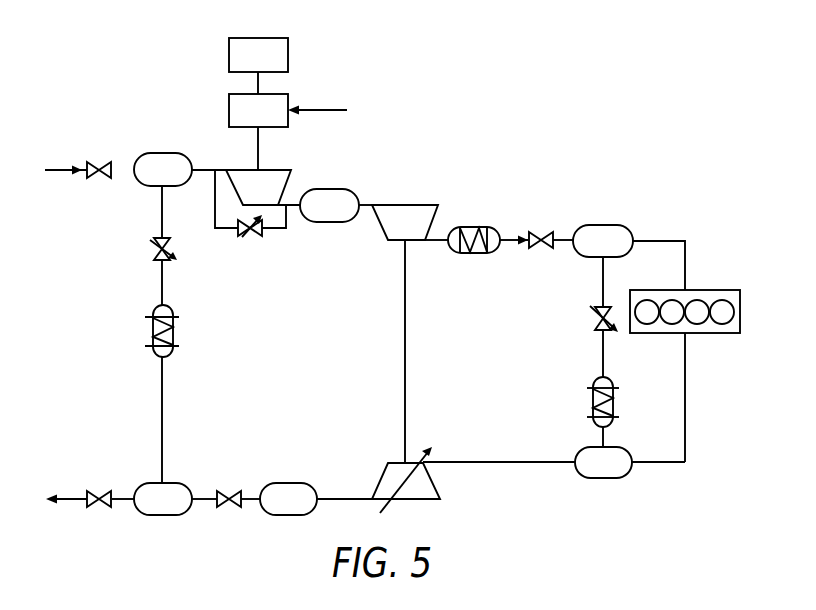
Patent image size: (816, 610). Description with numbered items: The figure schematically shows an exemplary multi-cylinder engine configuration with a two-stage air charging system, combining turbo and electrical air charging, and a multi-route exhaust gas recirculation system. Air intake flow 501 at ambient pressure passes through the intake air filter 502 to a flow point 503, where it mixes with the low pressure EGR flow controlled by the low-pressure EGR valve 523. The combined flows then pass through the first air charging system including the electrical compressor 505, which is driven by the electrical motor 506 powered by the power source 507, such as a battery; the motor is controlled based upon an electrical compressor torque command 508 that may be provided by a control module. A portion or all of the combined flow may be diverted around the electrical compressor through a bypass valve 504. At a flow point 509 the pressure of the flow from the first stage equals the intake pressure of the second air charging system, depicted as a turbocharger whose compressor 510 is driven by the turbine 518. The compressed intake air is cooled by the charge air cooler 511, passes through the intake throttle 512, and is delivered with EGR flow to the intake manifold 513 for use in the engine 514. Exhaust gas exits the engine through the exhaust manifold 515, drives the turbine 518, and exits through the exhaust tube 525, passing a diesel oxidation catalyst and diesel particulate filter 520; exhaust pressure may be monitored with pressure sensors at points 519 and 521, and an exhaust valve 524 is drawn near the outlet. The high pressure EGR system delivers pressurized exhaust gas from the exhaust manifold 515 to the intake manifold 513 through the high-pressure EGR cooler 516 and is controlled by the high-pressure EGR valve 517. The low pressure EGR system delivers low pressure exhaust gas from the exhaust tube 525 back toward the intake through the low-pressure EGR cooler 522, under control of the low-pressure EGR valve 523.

The air intake flow 501 is at (63, 168).
The intake air filter 502 is at (100, 165).
The flow point 503 is at (180, 182).
The bypass valve 504 is at (250, 240).
The electrical compressor 505 is at (278, 168).
The electrical motor 506 is at (275, 122).
The power source 507 is at (275, 66).
The electrical compressor torque command 508 is at (315, 108).
The flow point 509 is at (346, 216).
The compressor 510 is at (403, 203).
The charge air cooler 511 is at (472, 232).
The intake throttle 512 is at (541, 233).
The intake manifold 513 is at (620, 252).
The engine 514 is at (707, 289).
The exhaust manifold 515 is at (620, 474).
The high-pressure EGR cooler 516 is at (592, 400).
The high-pressure EGR valve 517 is at (592, 313).
The turbine 518 is at (412, 460).
The pressure monitoring point 519 is at (305, 510).
The diesel oxidation catalyst and diesel particulate filter 520 is at (233, 497).
The pressure monitoring point 521 is at (180, 510).
The low-pressure EGR cooler 522 is at (173, 337).
The low-pressure EGR valve 523 is at (157, 247).
The exhaust valve 524 is at (98, 497).
The exhaust tube 525 is at (75, 498).